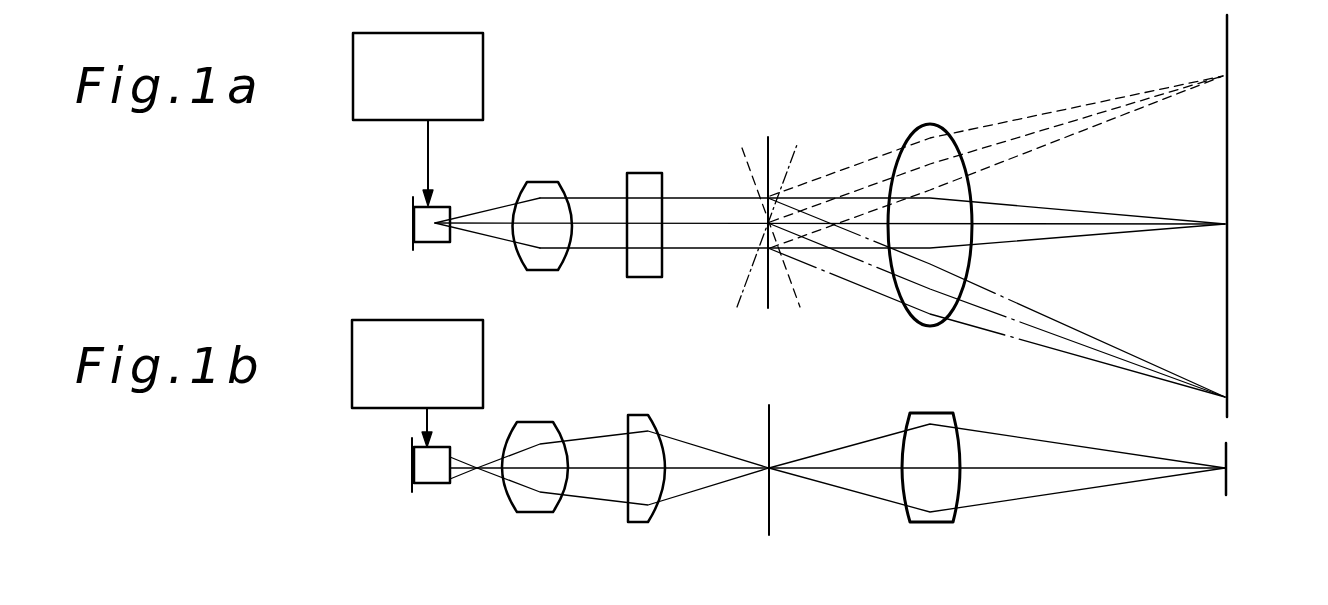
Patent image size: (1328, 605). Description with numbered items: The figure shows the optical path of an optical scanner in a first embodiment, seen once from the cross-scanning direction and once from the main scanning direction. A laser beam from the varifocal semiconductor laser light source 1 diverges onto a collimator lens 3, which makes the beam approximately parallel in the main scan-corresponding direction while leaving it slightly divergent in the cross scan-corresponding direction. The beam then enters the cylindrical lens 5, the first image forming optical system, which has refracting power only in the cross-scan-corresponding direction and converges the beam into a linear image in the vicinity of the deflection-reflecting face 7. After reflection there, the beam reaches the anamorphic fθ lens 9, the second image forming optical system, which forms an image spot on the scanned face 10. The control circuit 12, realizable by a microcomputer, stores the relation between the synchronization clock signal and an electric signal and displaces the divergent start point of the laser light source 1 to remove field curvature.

In FIG. 1A, the varifocal semiconductor laser light source 1 is at (444, 207).
In FIG. 1B, the varifocal semiconductor laser light source 1 is at (435, 483).
In FIG. 1A, the collimator lens 3 is at (548, 182).
In FIG. 1B, the collimator lens 3 is at (538, 512).
In FIG. 1A, the cylindrical lens 5 is at (640, 173).
In FIG. 1B, the cylindrical lens 5 is at (643, 522).
In FIG. 1A, the deflection-reflecting face 7 is at (770, 162).
In FIG. 1B, the deflection-reflecting face 7 is at (772, 432).
In FIG. 1A, the anamorphic fθ lens 9 is at (935, 125).
In FIG. 1B, the anamorphic fθ lens 9 is at (955, 415).
In FIG. 1A, the scanned face 10 is at (1230, 117).
In FIG. 1B, the scanned face 10 is at (1228, 487).
In FIG. 1A, the control circuit 12 is at (483, 93).
In FIG. 1B, the control circuit 12 is at (483, 377).